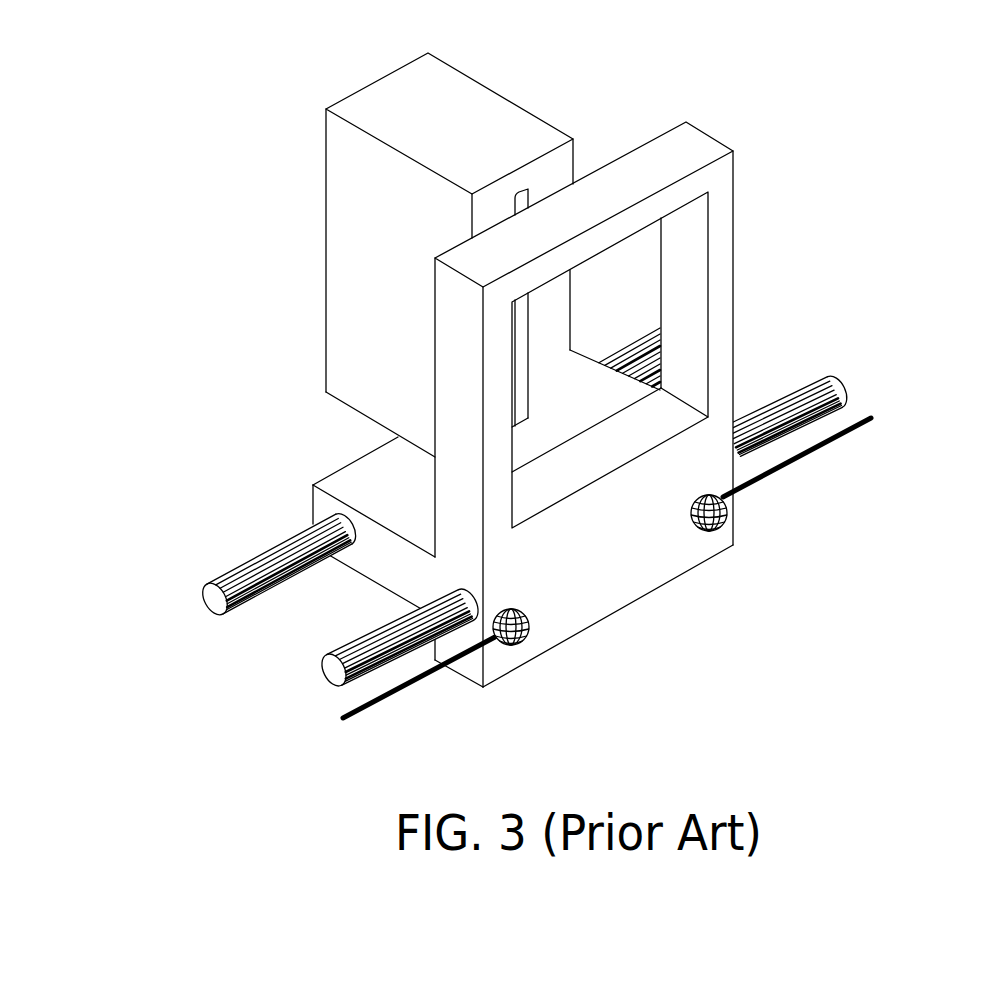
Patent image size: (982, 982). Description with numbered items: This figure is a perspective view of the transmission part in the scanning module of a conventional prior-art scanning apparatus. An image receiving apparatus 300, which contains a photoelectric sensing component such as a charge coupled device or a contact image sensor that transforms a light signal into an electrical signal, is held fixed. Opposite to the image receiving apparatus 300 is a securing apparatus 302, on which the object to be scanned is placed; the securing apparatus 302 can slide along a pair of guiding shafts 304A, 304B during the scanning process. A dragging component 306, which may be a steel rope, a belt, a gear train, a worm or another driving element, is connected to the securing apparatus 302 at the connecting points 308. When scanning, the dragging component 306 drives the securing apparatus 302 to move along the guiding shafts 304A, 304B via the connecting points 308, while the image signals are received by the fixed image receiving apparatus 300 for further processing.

The image receiving apparatus 300 is at (465, 73).
The securing apparatus 302 is at (703, 132).
The guiding shaft 304A is at (812, 378).
The guiding shaft 304B is at (228, 573).
The dragging component 306 is at (848, 440).
The connecting points 308 is at (723, 530).